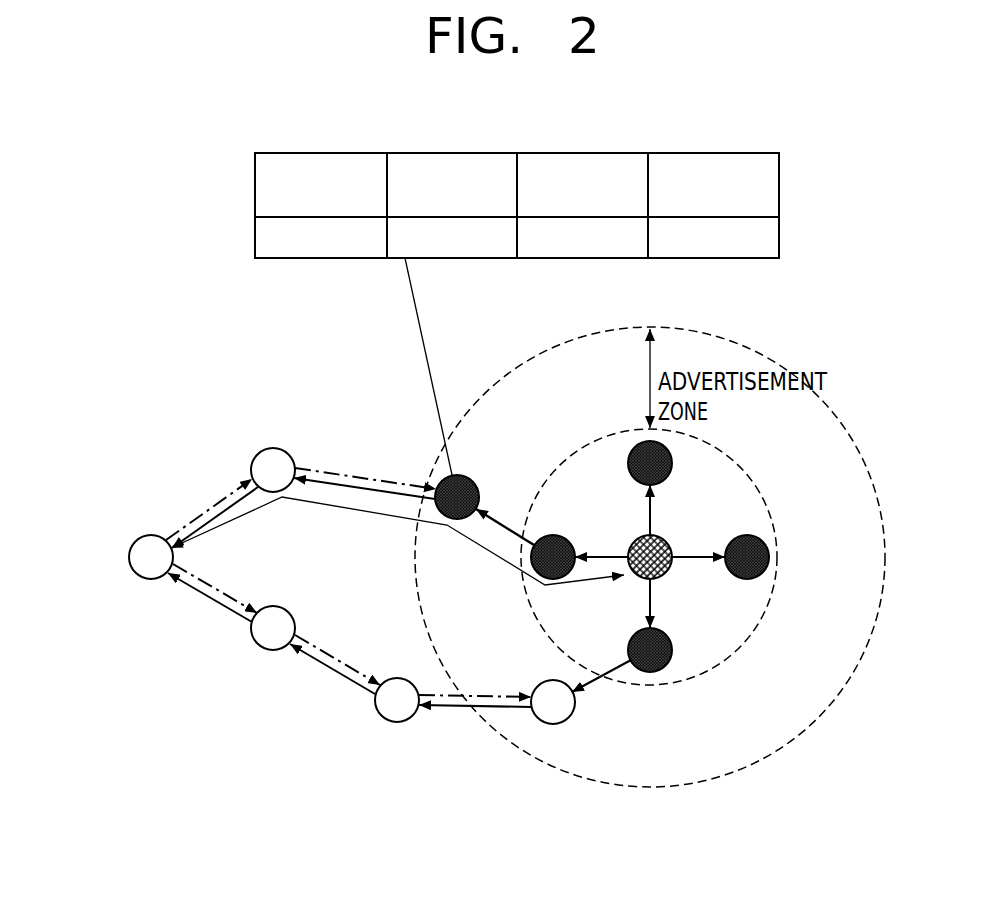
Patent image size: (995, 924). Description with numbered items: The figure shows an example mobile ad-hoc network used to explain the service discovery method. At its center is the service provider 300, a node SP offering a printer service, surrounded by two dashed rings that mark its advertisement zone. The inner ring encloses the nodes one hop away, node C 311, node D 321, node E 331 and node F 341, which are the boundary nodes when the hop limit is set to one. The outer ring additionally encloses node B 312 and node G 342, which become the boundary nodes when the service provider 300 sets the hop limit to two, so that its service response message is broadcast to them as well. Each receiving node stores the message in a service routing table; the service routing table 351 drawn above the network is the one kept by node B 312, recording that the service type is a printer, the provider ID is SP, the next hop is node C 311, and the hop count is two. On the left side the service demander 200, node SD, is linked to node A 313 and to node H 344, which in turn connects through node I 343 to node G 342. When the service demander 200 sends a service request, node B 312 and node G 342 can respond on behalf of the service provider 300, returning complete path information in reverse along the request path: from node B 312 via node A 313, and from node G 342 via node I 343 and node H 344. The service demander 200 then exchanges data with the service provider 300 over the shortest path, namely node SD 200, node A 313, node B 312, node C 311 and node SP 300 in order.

The service routing table 351 is at (406, 152).
The service demander 200 is at (129, 557).
The node A 313 is at (270, 447).
The node B 312 is at (473, 483).
The node C 311 is at (566, 537).
The service provider 300 is at (666, 540).
The node D 321 is at (673, 463).
The node E 331 is at (745, 580).
The node F 341 is at (633, 638).
The node G 342 is at (573, 716).
The node I 343 is at (397, 723).
The node H 344 is at (271, 651).